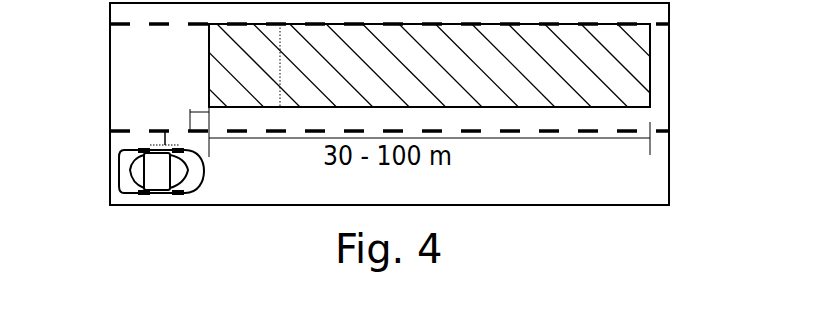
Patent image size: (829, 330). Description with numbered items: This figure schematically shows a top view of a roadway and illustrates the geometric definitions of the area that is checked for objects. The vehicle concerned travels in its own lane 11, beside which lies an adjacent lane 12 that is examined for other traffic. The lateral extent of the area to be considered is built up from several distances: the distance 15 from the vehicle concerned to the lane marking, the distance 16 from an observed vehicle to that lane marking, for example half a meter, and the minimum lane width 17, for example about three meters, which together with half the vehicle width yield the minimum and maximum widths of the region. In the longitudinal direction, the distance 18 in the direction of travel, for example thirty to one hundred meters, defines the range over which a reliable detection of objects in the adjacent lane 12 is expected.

The lane 11 is at (658, 173).
The adjacent lane 12 is at (657, 72).
The distance from the vehicle concerned to the lane marking 15 is at (163, 131).
The distance from the observed vehicle to the lane marking 16 is at (190, 111).
The minimum lane width 17 is at (280, 60).
The distance in the direction of travel for a reliable detection 18 is at (593, 142).